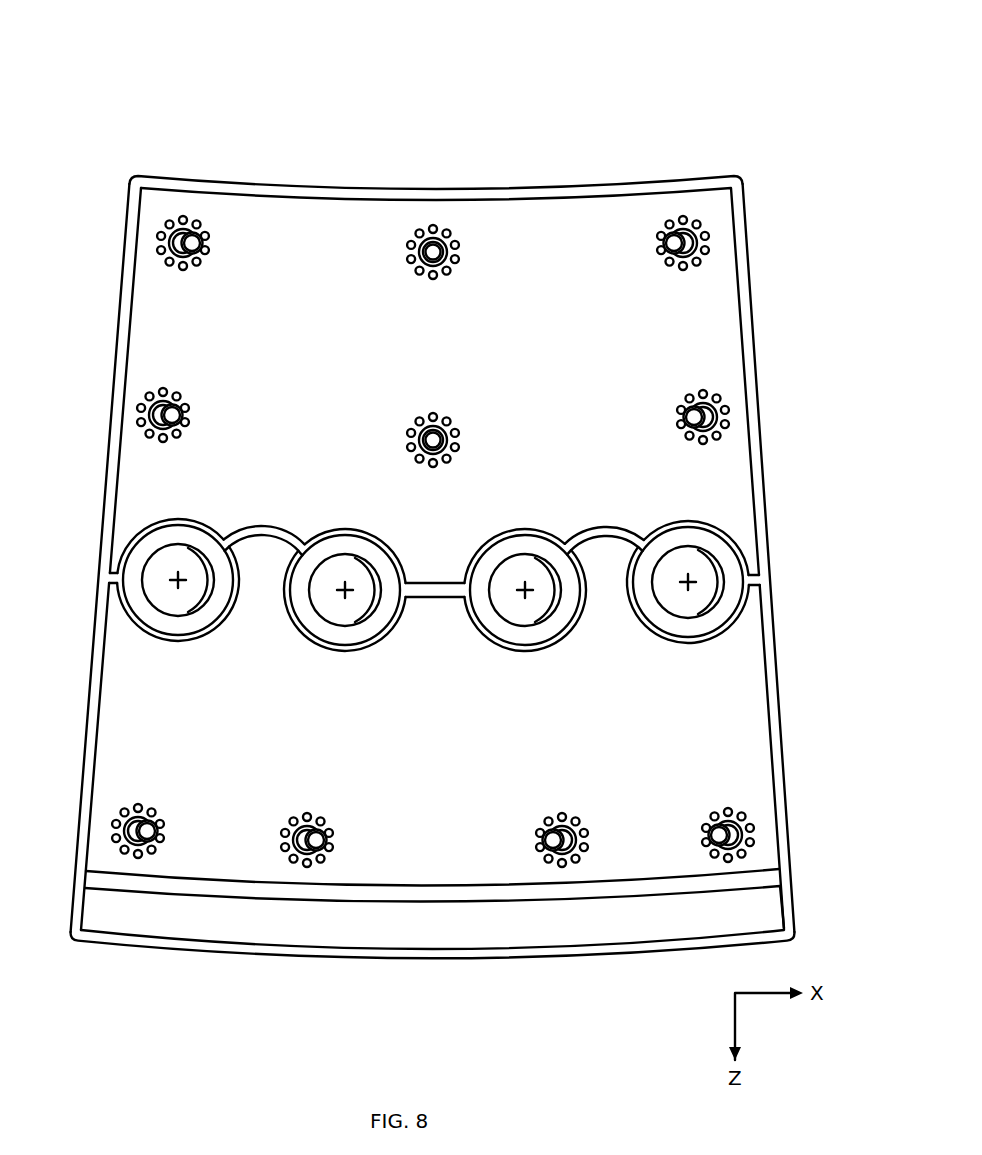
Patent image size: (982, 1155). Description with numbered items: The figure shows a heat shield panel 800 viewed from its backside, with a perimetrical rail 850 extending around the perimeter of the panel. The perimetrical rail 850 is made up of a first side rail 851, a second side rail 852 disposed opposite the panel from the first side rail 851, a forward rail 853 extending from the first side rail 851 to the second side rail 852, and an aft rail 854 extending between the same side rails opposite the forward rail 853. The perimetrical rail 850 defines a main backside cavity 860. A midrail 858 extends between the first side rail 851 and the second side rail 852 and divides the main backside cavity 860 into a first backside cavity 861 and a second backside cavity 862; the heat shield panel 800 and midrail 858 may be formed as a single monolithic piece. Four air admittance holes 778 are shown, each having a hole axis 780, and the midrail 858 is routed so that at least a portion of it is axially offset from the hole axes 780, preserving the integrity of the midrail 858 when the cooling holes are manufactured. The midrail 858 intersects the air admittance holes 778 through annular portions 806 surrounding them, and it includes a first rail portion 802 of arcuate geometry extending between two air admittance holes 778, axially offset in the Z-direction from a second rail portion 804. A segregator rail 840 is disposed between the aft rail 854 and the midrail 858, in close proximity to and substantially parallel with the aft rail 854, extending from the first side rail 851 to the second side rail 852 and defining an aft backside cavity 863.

The heat shield panel 800 is at (676, 104).
The forward rail 853 is at (293, 186).
The second side rail 852 is at (743, 226).
The aft rail 854 is at (155, 940).
The perimetrical rail 850 is at (130, 212).
The first side rail 851 is at (132, 249).
The main backside cavity 860 is at (529, 211).
The first backside cavity 861 is at (632, 360).
The second backside cavity 862 is at (420, 813).
The aft backside cavity 863 is at (459, 935).
The segregator rail 840 is at (313, 888).
The annular portions 806 is at (376, 628).
The midrail 858 is at (262, 526).
The first rail portion 802 is at (608, 521).
The second rail portion 804 is at (434, 577).
The air admittance hole 778 is at (700, 702).
The hole axis 780 is at (618, 650).